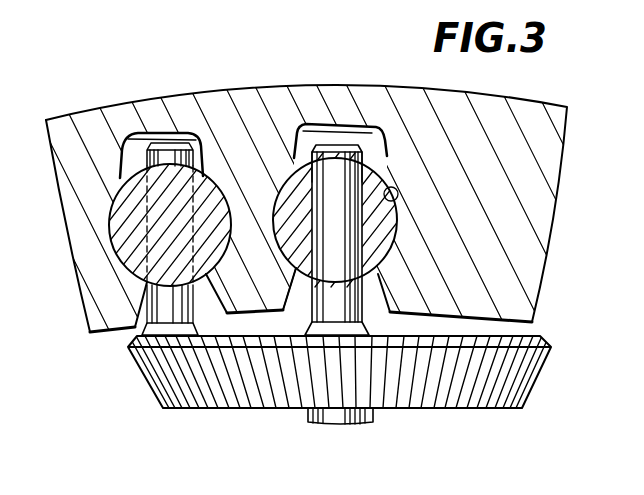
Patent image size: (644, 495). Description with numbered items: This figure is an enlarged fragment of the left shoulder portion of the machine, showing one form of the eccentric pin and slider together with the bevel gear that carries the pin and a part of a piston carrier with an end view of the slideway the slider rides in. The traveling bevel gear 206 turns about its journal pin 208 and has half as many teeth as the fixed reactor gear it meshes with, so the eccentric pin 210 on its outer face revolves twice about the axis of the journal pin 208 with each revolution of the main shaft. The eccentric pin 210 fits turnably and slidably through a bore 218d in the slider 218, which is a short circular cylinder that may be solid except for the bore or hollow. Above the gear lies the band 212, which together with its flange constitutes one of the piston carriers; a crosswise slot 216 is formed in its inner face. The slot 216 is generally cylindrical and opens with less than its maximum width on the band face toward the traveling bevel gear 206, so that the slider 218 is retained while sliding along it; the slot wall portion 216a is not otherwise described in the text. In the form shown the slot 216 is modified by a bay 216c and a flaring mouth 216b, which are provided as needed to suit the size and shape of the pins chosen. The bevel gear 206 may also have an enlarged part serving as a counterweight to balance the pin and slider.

The traveling bevel gear 206 is at (518, 377).
The journal pin 208 is at (325, 420).
The eccentric pin 210 is at (335, 264).
The band 212 is at (535, 105).
The slot 216 is at (374, 130).
The socket side wall 216a is at (276, 213).
The flaring mouth 216b is at (336, 291).
The bay 216c is at (347, 124).
The slider 218 is at (398, 203).
The bore 218d is at (323, 182).